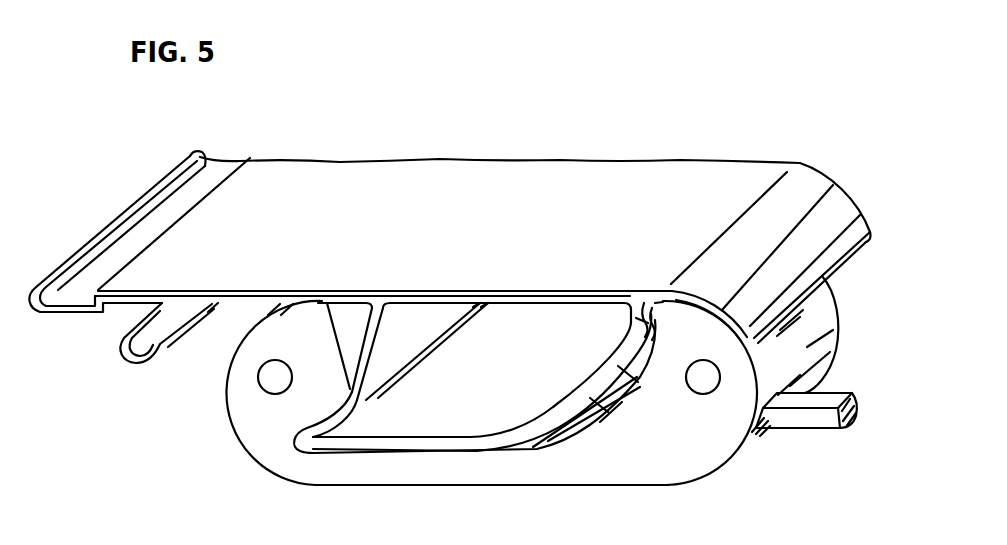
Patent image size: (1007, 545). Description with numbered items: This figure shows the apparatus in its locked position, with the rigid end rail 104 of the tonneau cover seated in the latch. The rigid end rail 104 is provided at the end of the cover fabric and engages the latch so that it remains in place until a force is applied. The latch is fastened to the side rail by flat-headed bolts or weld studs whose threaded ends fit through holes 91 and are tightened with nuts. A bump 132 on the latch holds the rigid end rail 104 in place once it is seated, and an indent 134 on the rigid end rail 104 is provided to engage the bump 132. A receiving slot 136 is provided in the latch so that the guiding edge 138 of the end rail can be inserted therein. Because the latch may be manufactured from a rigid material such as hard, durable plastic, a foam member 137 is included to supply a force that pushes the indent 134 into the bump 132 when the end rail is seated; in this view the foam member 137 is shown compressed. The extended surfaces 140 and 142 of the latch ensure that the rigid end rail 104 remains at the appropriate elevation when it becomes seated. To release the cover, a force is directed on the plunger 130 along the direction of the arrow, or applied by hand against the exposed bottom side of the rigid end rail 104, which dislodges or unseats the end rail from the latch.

The rigid end rail 104 is at (472, 234).
The extended surface 140 is at (350, 389).
The bump 132 is at (655, 313).
The extended surface 142 is at (678, 303).
The indent 134 is at (641, 307).
The receiving slot 136 is at (293, 450).
The foam member 137 is at (300, 427).
The guiding edge 138 is at (307, 438).
The hole 91 is at (283, 384).
The plunger 130 is at (815, 424).